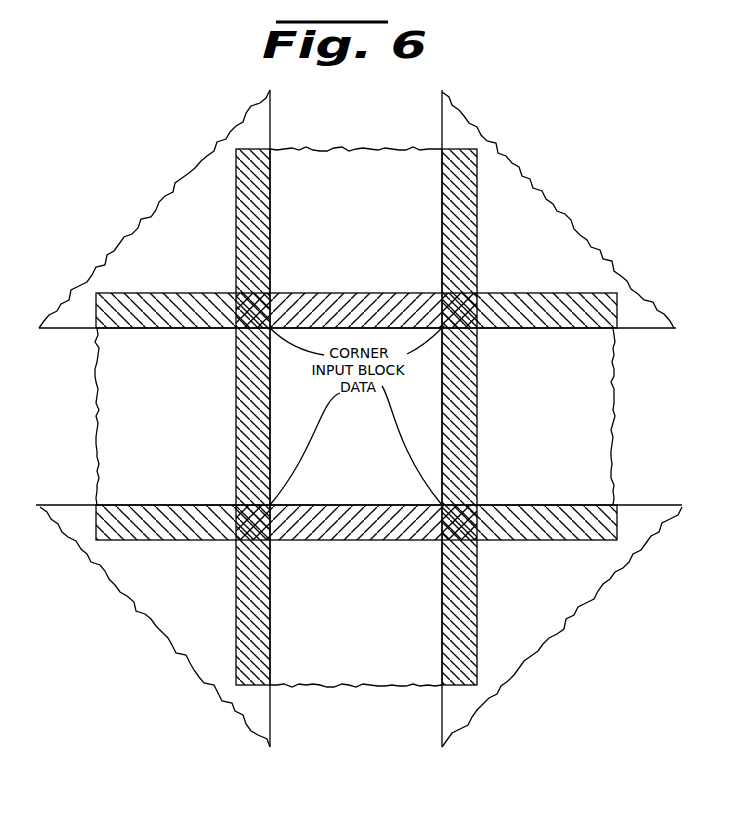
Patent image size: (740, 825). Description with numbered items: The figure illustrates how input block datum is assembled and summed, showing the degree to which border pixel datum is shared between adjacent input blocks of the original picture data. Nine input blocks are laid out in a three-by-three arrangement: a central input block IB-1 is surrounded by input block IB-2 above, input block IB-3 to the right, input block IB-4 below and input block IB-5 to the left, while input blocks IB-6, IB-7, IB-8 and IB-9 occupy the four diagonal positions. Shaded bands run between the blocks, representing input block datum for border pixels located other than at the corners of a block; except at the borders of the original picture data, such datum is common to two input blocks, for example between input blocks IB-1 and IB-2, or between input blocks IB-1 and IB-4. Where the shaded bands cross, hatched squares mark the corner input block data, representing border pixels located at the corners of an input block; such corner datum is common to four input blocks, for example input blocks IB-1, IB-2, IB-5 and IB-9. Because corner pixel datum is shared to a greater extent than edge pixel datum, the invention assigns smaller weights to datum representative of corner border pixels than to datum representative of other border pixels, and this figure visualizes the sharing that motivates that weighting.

The input block IB-1 is at (377, 434).
The input block IB-2 is at (377, 219).
The input block IB-3 is at (587, 434).
The input block IB-4 is at (378, 644).
The input block IB-5 is at (170, 434).
The input block IB-6 is at (585, 269).
The input block IB-7 is at (587, 591).
The input block IB-8 is at (170, 591).
The input block IB-9 is at (172, 269).